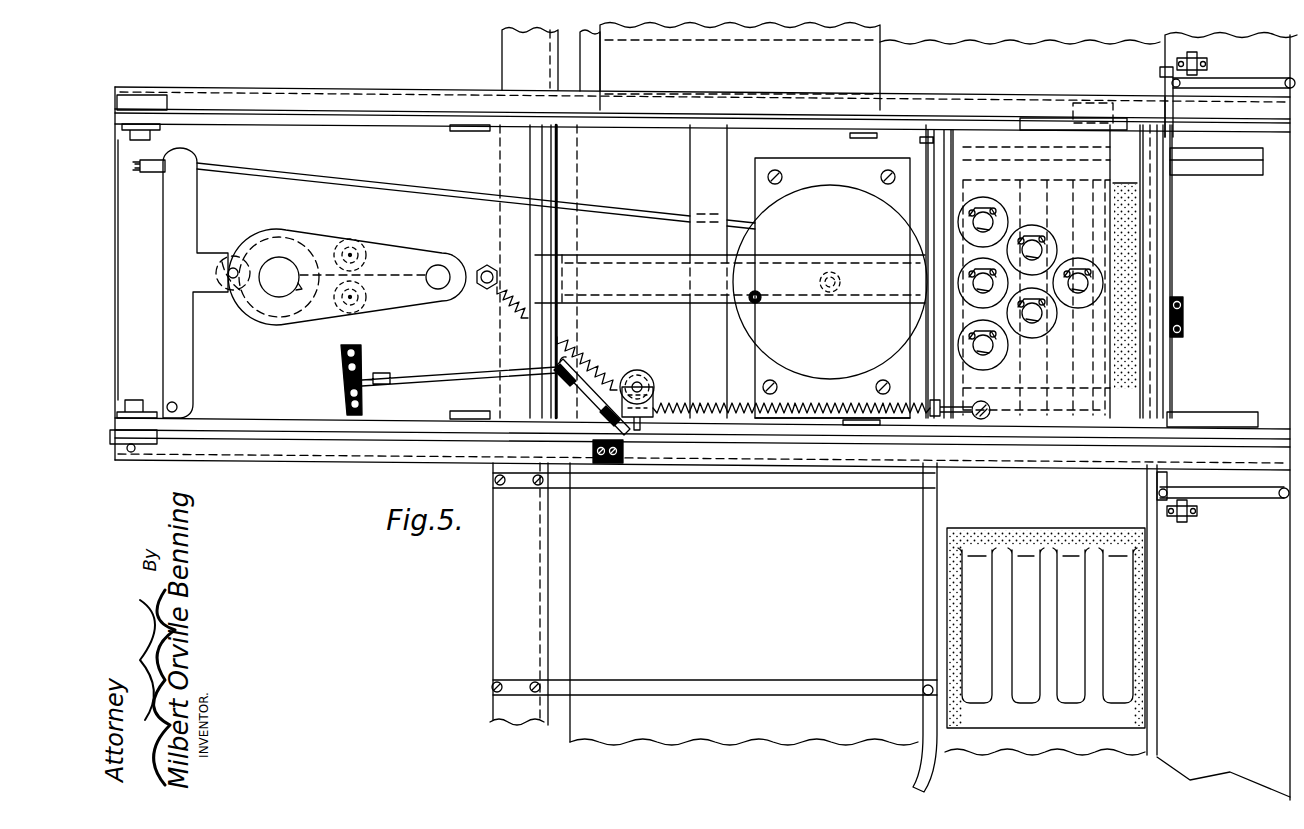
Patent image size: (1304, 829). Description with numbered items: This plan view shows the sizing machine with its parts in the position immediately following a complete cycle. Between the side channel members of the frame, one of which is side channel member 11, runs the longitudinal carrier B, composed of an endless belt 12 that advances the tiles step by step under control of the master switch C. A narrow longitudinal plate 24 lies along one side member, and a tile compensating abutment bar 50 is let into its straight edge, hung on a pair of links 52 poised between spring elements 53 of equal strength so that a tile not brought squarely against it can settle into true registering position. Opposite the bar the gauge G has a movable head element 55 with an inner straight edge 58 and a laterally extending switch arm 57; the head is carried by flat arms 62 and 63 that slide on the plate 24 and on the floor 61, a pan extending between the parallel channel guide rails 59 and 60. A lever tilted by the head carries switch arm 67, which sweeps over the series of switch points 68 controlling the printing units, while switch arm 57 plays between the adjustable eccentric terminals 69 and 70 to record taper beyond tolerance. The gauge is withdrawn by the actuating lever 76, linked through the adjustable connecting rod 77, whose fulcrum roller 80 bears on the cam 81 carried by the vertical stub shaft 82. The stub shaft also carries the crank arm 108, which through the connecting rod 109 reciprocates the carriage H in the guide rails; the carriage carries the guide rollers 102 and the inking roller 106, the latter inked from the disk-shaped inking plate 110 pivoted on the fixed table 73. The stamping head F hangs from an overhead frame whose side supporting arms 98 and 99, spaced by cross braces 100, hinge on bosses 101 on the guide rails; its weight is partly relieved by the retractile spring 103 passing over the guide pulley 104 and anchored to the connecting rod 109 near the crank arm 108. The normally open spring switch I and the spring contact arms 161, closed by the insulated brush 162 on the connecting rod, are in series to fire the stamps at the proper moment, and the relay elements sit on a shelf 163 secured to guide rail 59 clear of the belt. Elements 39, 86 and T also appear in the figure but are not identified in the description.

The side channel member 11 is at (490, 582).
The endless belt 12 is at (805, 730).
The longitudinal plate 24 is at (1223, 691).
The slots 39 is at (1067, 695).
The tile compensating abutment bar 50 is at (1167, 92).
The links 52 is at (1262, 80).
The spring elements 53 is at (1177, 58).
The head element 55 is at (958, 145).
The electrical switch arm 57 is at (462, 265).
The inner straight edge 58 is at (963, 146).
The channel guide rail 59 is at (445, 90).
The channel guide rail 60 is at (257, 462).
The floor 61 is at (194, 270).
The flat supporting arm 62 is at (1240, 160).
The flat supporting arm 63 is at (1247, 413).
The electrical switch arm 67 is at (435, 373).
The switch points 68 is at (359, 353).
The adjustable terminal 69 is at (352, 240).
The adjustable terminal 70 is at (345, 320).
The fixed table 73 is at (821, 398).
The actuating lever 76 is at (165, 237).
The adjustable connecting rod 77 is at (380, 182).
The antifriction fulcrum roller 80 is at (232, 252).
The actuating cam 81 is at (267, 308).
The vertical stub shaft 82 is at (279, 257).
The pawl 86 is at (243, 244).
The side supporting arm 98 is at (330, 423).
The side supporting arm 99 is at (352, 120).
The cross braces 100 is at (558, 170).
The bosses 101 is at (157, 102).
The guide rollers 102 is at (1177, 143).
The retractile spring 103 is at (707, 415).
The guide pulley 104 is at (643, 367).
The inking roller 106 is at (1137, 288).
The crank arm 108 is at (407, 252).
The connecting rod 109 is at (730, 279).
The inking plate 110 is at (830, 282).
The spring contact arms 161 is at (578, 358).
The insulated brush 162 is at (760, 293).
The shelf 163 is at (740, 67).
The longitudinal carrier B is at (1147, 518).
The master switch C is at (1180, 268).
The stamping head F is at (1036, 281).
The gauge G is at (910, 212).
The carriage H is at (1043, 120).
The normally open spring switch I is at (803, 430).
The tray T is at (1133, 355).